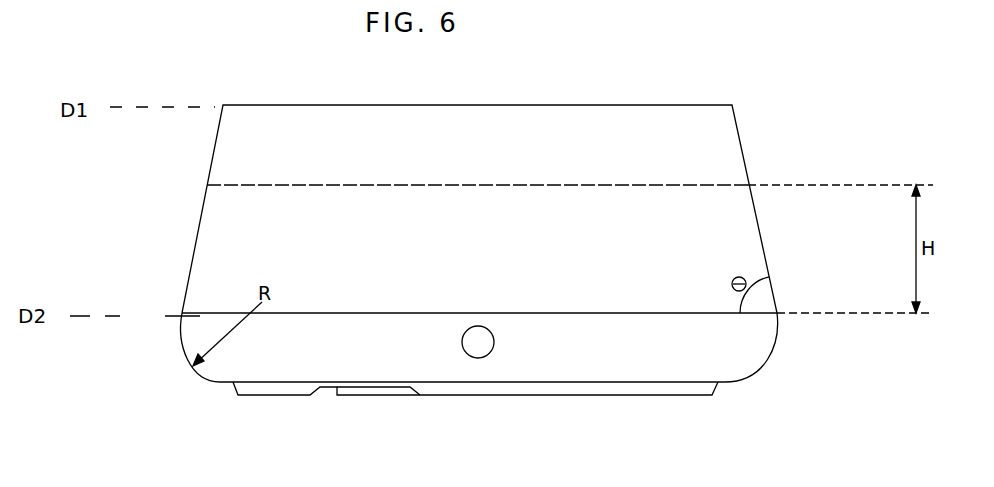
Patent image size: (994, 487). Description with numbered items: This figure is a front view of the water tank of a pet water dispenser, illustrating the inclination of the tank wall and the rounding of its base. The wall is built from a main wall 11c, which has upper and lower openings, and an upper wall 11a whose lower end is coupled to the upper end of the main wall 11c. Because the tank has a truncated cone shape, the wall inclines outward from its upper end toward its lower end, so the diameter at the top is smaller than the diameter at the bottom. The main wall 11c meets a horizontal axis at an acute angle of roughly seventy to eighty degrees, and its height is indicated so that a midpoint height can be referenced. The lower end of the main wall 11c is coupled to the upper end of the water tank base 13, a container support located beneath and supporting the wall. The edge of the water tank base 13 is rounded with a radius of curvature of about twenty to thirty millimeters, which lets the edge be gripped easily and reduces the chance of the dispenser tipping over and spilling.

The upper wall 11a is at (727, 141).
The main wall 11c is at (757, 215).
The water tank base 13 is at (783, 343).